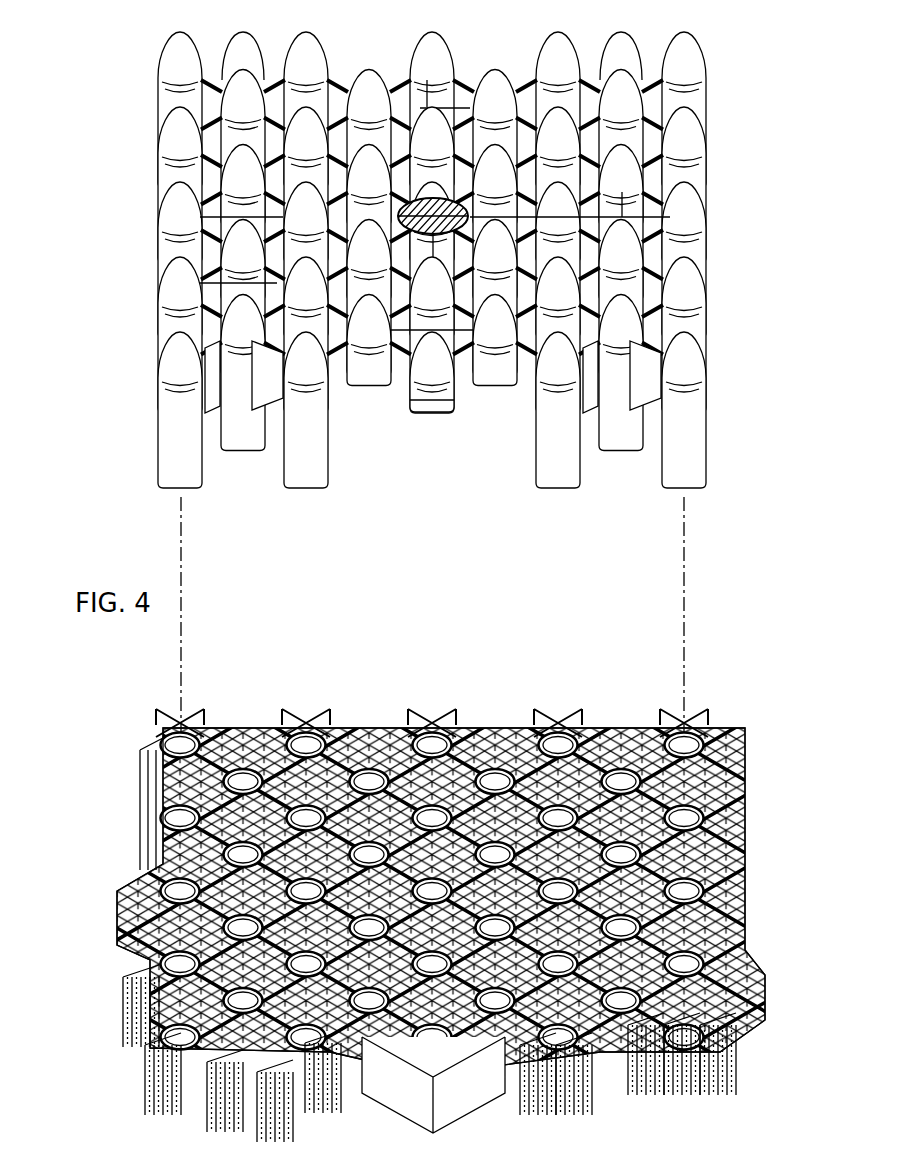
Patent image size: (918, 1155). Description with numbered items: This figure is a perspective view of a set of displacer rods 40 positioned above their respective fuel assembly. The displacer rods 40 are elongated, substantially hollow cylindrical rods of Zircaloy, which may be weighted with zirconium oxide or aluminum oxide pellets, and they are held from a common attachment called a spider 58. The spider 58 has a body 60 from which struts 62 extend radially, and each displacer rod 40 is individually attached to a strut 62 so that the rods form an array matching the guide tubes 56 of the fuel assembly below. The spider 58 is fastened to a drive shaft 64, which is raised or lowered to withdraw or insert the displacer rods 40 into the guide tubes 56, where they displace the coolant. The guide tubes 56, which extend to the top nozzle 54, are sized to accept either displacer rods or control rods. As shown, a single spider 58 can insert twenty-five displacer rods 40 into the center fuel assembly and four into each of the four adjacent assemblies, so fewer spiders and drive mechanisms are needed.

The displacer rod 40 is at (328, 427).
The top nozzle 54 is at (459, 694).
The guide tube 56 is at (318, 727).
The spider 58 is at (650, 250).
The body 60 is at (433, 203).
The strut 62 is at (431, 252).
The drive shaft 64 is at (442, 207).